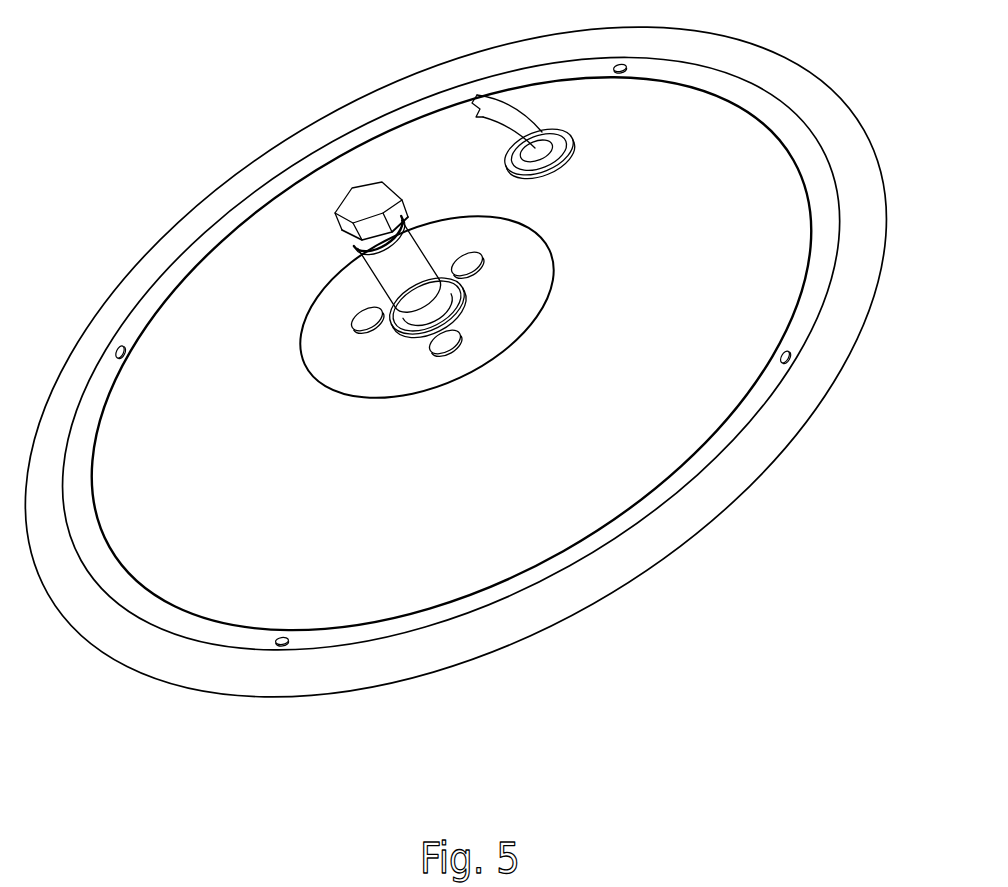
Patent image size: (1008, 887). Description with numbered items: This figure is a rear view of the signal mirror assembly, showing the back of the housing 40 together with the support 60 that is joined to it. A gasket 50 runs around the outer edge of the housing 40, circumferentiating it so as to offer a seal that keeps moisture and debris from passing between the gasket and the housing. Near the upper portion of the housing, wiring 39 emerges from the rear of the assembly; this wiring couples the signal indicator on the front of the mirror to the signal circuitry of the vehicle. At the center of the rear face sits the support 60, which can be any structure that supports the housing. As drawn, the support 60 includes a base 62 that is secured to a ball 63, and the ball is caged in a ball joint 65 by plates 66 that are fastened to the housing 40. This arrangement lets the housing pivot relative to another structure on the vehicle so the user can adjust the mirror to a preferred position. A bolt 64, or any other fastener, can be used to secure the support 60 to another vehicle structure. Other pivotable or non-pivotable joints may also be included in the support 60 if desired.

The wiring 39 is at (527, 113).
The housing 40 is at (480, 478).
The gasket 50 is at (622, 567).
The support 60 is at (408, 207).
The base 62 is at (413, 251).
The ball 63 is at (445, 303).
The bolt 64 is at (386, 190).
The ball joint 65 is at (458, 320).
The plates 66 is at (523, 323).